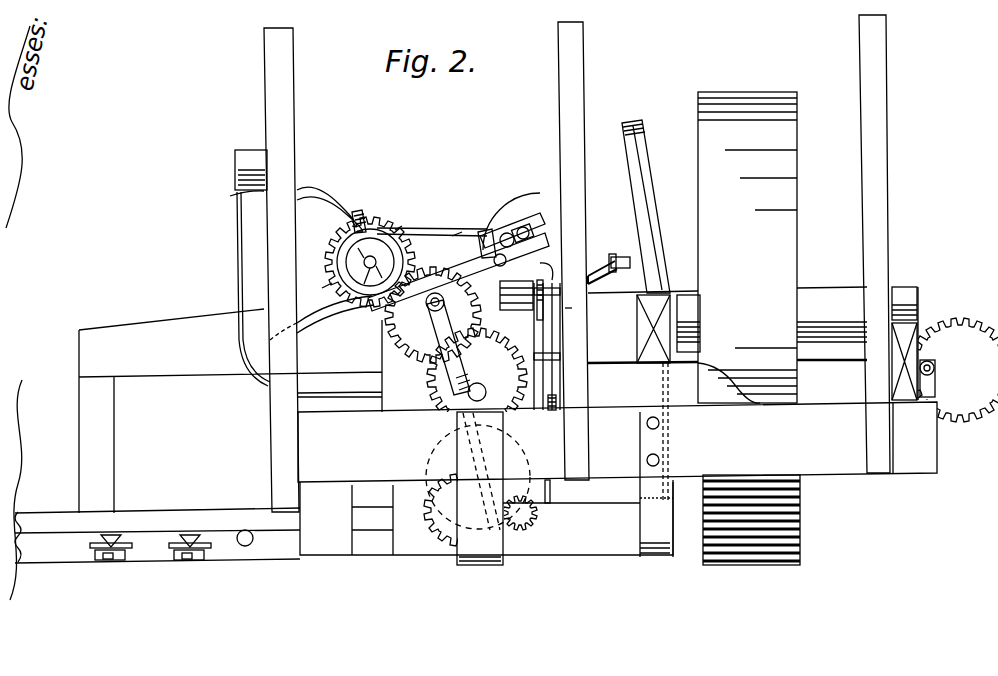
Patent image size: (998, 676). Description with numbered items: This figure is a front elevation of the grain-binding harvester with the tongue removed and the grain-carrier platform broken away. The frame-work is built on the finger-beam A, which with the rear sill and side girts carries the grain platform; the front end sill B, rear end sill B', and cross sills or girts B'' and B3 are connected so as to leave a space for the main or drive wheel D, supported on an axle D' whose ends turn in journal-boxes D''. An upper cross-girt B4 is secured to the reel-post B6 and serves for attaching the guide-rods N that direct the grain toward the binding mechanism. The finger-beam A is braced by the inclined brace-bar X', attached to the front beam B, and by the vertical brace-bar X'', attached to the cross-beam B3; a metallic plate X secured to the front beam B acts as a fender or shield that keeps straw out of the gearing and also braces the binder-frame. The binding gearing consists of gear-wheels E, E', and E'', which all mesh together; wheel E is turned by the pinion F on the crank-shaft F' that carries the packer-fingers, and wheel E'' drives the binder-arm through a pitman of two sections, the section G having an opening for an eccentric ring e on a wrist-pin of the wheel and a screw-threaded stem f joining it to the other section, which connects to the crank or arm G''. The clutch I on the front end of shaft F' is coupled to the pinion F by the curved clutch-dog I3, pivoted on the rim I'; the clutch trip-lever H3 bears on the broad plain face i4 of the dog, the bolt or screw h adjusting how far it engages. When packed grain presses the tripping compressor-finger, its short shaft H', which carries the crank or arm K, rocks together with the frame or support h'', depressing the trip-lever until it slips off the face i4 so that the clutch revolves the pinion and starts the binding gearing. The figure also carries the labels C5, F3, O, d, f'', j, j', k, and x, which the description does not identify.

The finger-beam A is at (289, 535).
The front end sill B is at (617, 478).
The rear end sill B' is at (465, 404).
The cross sill or girt B3 is at (653, 327).
The upper cross-girt B4 is at (412, 251).
The reel-post B6 is at (577, 263).
The cross sill or girt B'' is at (913, 361).
The pin C5 is at (245, 547).
The main or drive wheel D is at (749, 328).
The axle D' is at (727, 325).
The journal-boxes D'' is at (797, 343).
The gear-wheel E is at (433, 315).
The gear-wheel E' is at (477, 378).
The gear-wheel E'' is at (460, 510).
The pinion F is at (359, 262).
The shaft F' is at (316, 291).
The curved arm F3 is at (302, 259).
The pitman section G is at (433, 324).
The crank or arm G'' is at (448, 338).
The short shaft H' is at (523, 239).
The clutch trip-lever H3 is at (458, 272).
The clutch I is at (370, 262).
The rim I' is at (432, 214).
The clutch-dog I3 is at (441, 219).
The broad plain face i4 is at (398, 223).
The crank or arm K is at (539, 414).
The slide cross bar k is at (574, 387).
The guide-rods N is at (243, 289).
The arc guide O is at (511, 219).
The metallic plate X is at (480, 488).
The brace-bar X' is at (638, 484).
The brace-bar X'' is at (636, 431).
The pawl d is at (359, 212).
The eccentric ring e is at (526, 505).
The screw-threaded stem f is at (488, 341).
The bolt f'' is at (528, 309).
The bolt or screw h is at (519, 226).
The frame or support h'' is at (499, 233).
The hook j is at (548, 268).
The pin j' is at (573, 307).
The crank x is at (478, 471).